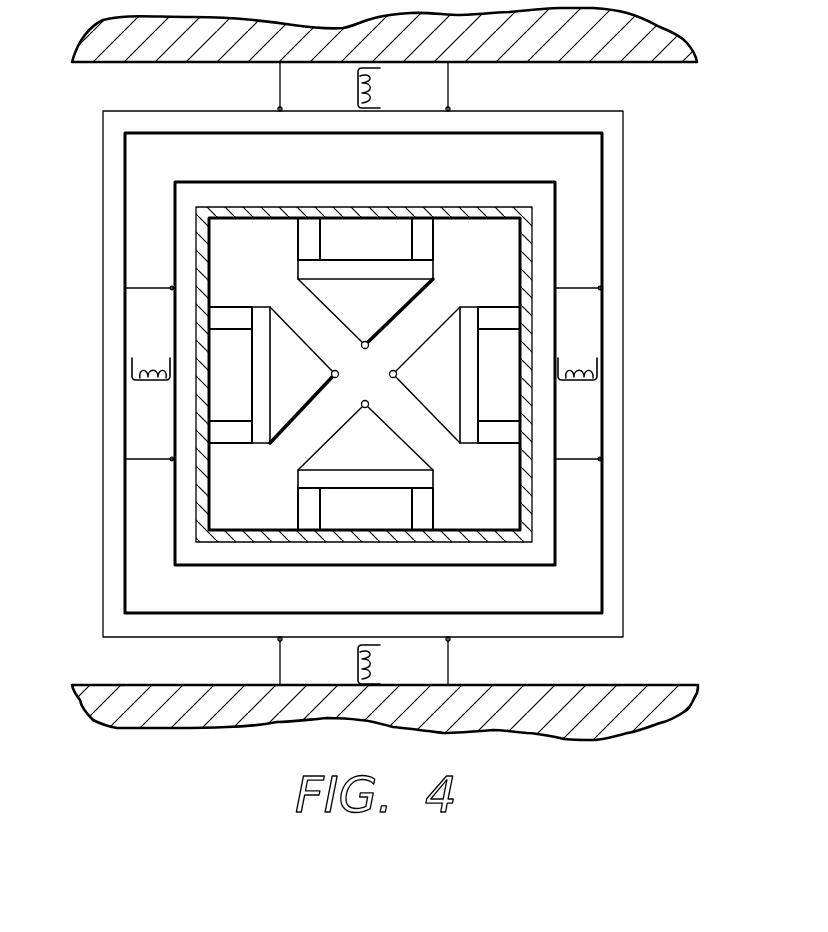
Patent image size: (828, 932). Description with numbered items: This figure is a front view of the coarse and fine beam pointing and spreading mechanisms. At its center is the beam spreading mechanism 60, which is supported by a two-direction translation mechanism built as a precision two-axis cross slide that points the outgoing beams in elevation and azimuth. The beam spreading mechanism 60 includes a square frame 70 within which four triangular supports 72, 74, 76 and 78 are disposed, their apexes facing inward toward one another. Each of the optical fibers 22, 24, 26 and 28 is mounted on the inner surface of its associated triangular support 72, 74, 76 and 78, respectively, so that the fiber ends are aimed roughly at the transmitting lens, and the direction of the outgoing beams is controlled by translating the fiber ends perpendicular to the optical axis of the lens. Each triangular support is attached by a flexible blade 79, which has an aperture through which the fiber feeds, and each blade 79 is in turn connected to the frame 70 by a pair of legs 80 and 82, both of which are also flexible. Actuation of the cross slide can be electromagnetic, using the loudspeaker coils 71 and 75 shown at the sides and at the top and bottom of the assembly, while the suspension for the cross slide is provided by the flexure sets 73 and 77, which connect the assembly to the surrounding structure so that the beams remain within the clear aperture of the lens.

The optical fiber 22 is at (369, 347).
The optical fiber 24 is at (394, 378).
The optical fiber 26 is at (337, 371).
The optical fiber 28 is at (362, 403).
The beam spreading mechanism 60 is at (450, 542).
The square frame 70 is at (438, 206).
The loudspeaker coil 71 is at (150, 360).
The triangular support 72 is at (300, 284).
The flexure set 73 is at (278, 73).
The triangular support 74 is at (429, 408).
The loudspeaker coil 75 is at (357, 71).
The triangular support 76 is at (312, 452).
The flexure set 77 is at (149, 288).
The triangular support 78 is at (301, 335).
The flexible blade 79 is at (258, 306).
The leg 80 is at (434, 228).
The leg 82 is at (297, 225).